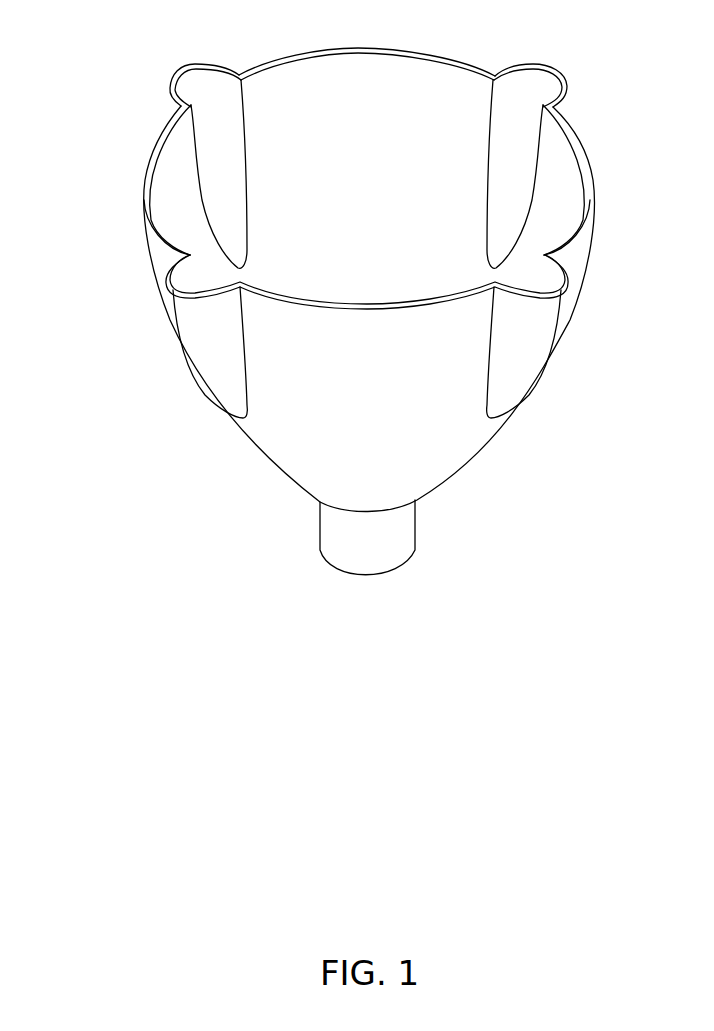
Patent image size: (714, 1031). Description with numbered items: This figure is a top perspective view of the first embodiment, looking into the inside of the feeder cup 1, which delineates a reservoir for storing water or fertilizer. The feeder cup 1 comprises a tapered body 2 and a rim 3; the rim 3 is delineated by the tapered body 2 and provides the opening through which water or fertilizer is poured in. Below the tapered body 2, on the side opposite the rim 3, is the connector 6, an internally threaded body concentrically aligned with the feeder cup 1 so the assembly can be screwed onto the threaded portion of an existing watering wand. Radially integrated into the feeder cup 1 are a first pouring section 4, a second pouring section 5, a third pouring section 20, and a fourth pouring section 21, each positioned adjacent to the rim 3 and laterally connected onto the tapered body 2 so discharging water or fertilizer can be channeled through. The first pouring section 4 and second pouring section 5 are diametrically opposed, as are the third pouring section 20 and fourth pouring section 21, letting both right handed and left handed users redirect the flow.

The feeder cup 1 is at (100, 263).
The tapered body 2 is at (268, 453).
The rim 3 is at (362, 50).
The first pouring section 4 is at (192, 355).
The second pouring section 5 is at (562, 102).
The connector 6 is at (410, 530).
The third pouring section 20 is at (533, 368).
The fourth pouring section 21 is at (172, 100).